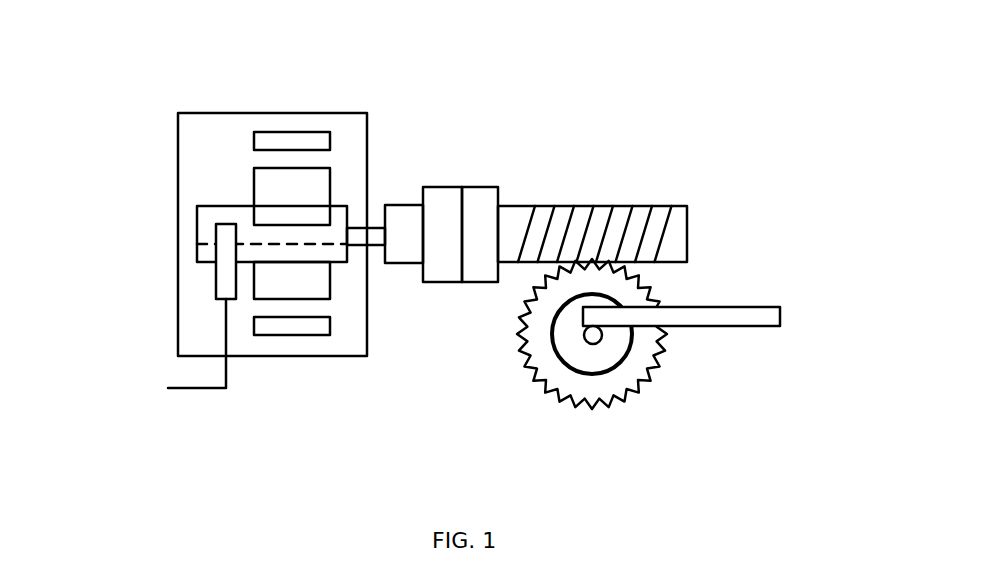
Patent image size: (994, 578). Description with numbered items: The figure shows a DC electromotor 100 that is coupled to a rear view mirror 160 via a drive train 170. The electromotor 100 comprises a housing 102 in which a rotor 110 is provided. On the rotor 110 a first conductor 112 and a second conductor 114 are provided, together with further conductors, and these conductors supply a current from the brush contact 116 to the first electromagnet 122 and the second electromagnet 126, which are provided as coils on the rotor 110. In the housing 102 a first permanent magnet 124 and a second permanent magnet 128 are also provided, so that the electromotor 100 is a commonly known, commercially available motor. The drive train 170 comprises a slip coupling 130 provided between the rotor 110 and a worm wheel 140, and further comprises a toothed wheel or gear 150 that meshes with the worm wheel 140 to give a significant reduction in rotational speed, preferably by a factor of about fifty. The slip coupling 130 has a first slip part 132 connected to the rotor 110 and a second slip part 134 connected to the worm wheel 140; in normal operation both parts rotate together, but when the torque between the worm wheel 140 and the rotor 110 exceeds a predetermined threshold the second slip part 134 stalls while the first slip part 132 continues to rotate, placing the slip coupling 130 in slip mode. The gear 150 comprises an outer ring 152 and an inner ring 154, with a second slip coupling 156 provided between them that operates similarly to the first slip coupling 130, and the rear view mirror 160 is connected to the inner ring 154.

The DC electromotor 100 is at (158, 127).
The housing 102 is at (187, 113).
The rotor 110 is at (186, 226).
The first conductor 112 is at (197, 212).
The second conductor 114 is at (210, 257).
The brush contact 116 is at (222, 283).
The first electromagnet 122 is at (332, 185).
The first permanent magnet 124 is at (270, 132).
The second electromagnet 126 is at (313, 290).
The second permanent magnet 128 is at (278, 334).
The slip coupling 130 is at (481, 157).
The first slip part 132 is at (436, 187).
The second slip part 134 is at (500, 187).
The worm wheel 140 is at (675, 213).
The gear 150 is at (658, 417).
The outer ring 152 is at (541, 362).
The inner ring 154 is at (585, 356).
The second slip coupling 156 is at (598, 344).
The rear view mirror 160 is at (757, 323).
The drive train 170 is at (768, 144).